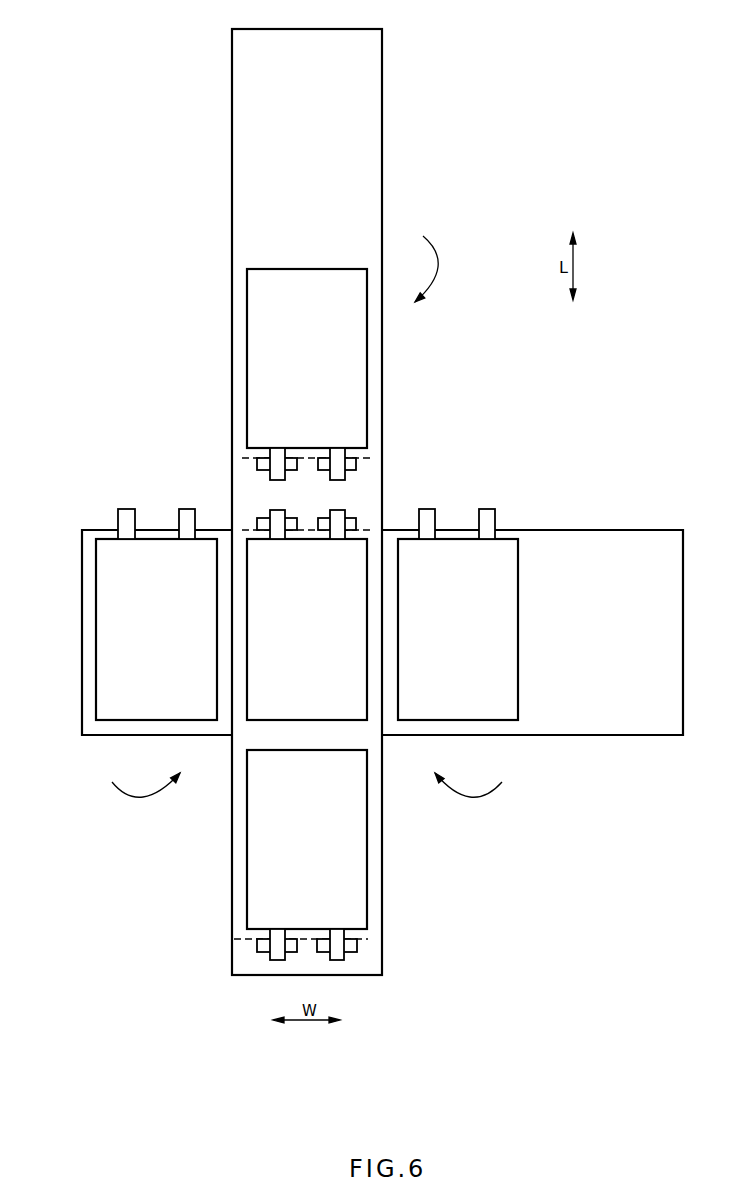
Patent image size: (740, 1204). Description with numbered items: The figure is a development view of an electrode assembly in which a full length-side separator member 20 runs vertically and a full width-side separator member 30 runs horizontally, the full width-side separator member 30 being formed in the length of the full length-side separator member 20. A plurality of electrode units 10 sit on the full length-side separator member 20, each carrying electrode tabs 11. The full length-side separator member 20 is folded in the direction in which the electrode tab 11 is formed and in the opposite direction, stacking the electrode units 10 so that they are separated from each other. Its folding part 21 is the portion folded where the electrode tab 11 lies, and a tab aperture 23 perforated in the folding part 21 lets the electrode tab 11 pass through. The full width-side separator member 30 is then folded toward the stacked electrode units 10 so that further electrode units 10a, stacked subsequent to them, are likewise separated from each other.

The electrode unit 10 is at (358, 358).
The electrode unit 10a is at (96, 628).
The electrode tab 11 is at (127, 509).
The full length-side separator member 20 is at (382, 146).
The folding part 21 is at (370, 530).
The tab aperture 23 is at (260, 462).
The full width-side separator member 30 is at (628, 530).